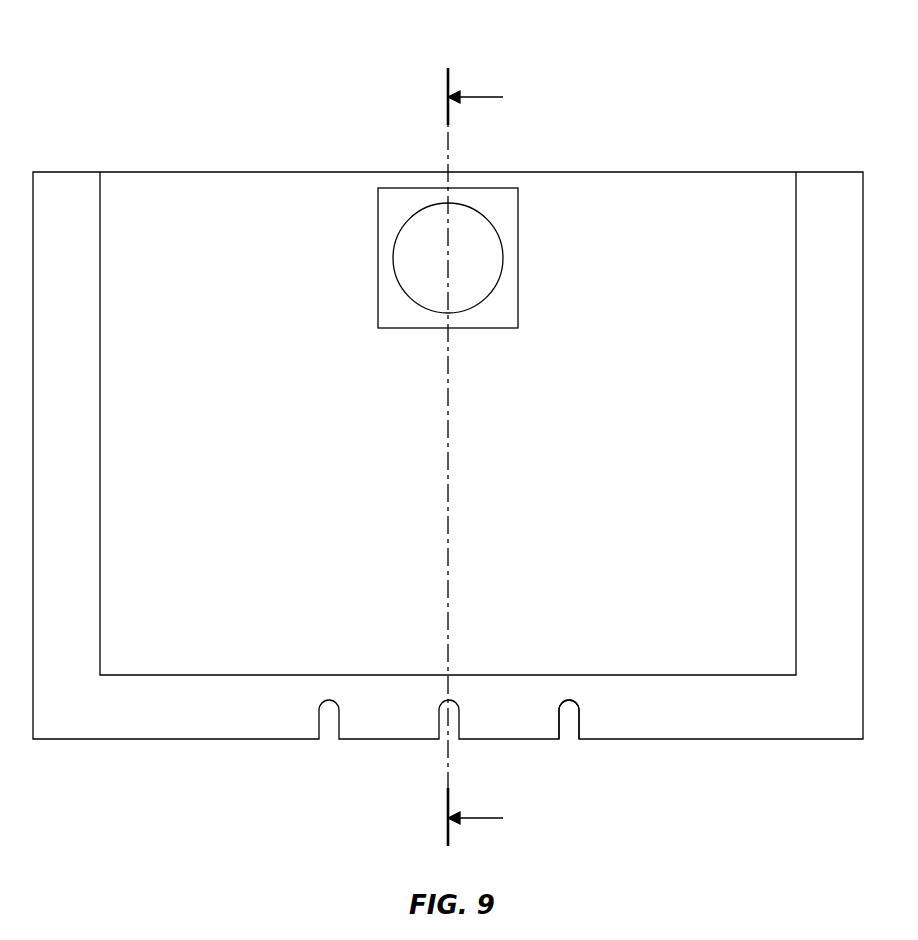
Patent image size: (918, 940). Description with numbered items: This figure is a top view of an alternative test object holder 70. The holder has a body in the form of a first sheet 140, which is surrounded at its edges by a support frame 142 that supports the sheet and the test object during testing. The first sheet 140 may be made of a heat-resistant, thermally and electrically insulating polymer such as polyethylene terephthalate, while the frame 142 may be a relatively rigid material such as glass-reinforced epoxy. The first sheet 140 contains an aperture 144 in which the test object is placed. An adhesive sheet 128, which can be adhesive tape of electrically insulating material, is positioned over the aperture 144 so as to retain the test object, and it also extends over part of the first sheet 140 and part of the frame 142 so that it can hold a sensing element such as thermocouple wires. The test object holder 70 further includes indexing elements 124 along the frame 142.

The test object holder 70 is at (700, 63).
The indexing elements 124 is at (565, 733).
The adhesive sheet 128 is at (503, 203).
The first sheet 140 is at (243, 190).
The support frame 142 is at (203, 708).
The aperture 144 is at (435, 218).